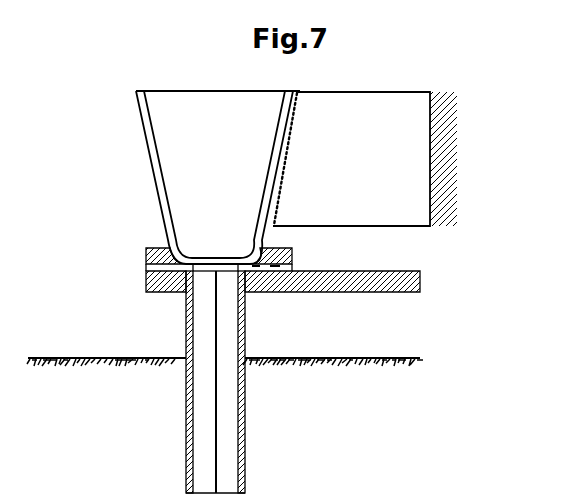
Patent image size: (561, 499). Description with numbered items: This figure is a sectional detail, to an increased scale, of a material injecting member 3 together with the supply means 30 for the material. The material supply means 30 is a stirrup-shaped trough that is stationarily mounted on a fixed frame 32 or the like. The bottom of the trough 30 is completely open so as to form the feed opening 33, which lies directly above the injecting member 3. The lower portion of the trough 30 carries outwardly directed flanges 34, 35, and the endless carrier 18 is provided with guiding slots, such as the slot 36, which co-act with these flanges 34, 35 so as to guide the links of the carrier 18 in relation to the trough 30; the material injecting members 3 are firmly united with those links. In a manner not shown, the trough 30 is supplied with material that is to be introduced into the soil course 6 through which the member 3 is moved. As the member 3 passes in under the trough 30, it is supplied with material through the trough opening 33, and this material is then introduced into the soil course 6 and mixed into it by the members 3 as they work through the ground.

The material supply means 30 is at (153, 160).
The fixed frame 32 is at (438, 208).
The feed opening 33 is at (210, 264).
The outwardly directed flange 34 is at (165, 268).
The outwardly directed flange 35 is at (288, 263).
The guiding slot 36 is at (258, 272).
The endless carrier 18 is at (368, 292).
The material injecting member 3 is at (186, 402).
The soil course 6 is at (76, 418).